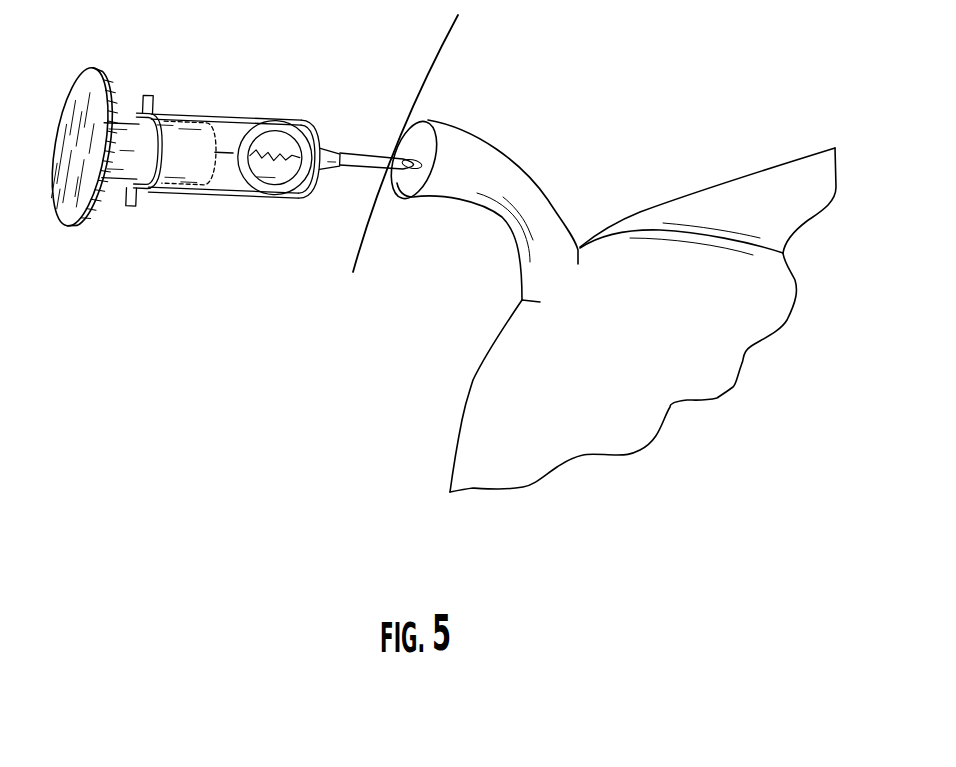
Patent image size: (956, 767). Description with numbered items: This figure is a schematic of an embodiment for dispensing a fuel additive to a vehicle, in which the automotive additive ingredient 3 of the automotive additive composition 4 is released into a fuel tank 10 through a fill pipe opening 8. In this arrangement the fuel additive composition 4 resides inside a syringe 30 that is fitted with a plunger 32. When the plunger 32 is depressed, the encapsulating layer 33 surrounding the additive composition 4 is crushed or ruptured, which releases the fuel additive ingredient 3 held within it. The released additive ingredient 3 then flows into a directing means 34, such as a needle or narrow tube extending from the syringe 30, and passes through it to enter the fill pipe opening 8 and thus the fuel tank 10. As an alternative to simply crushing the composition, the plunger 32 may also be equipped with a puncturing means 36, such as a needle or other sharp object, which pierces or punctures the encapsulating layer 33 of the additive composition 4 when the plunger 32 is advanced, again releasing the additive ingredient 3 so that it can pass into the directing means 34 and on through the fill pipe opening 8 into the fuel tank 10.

The automotive additive ingredient 3 is at (278, 165).
The automotive additive composition 4 is at (313, 122).
The fill pipe opening 8 is at (390, 175).
The fuel tank 10 is at (748, 297).
The syringe 30 is at (232, 165).
The plunger 32 is at (117, 97).
The encapsulating layer 33 is at (274, 167).
The directing means 34 is at (383, 149).
The puncturing means 36 is at (226, 140).